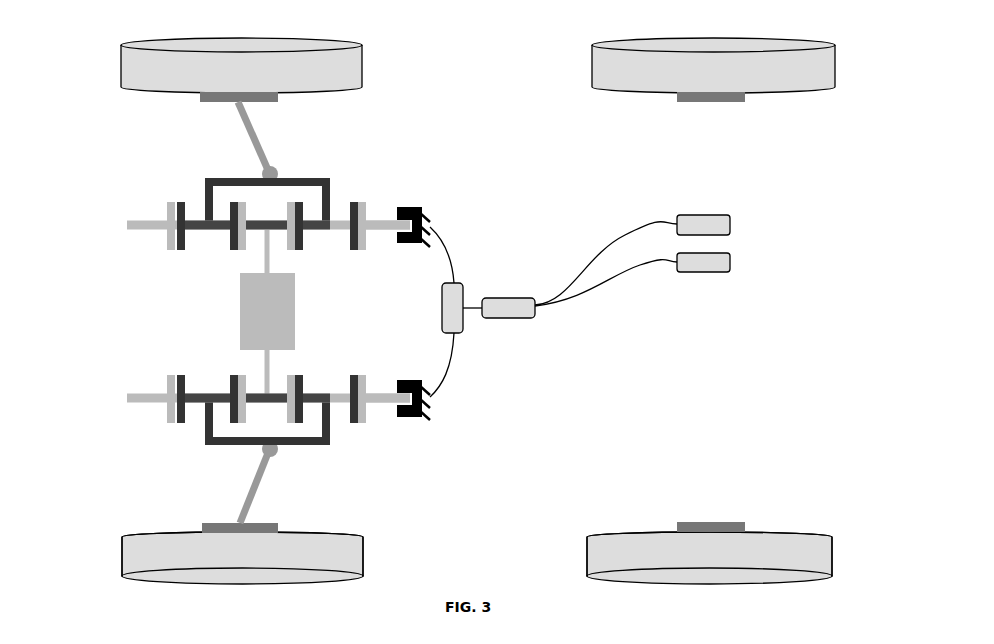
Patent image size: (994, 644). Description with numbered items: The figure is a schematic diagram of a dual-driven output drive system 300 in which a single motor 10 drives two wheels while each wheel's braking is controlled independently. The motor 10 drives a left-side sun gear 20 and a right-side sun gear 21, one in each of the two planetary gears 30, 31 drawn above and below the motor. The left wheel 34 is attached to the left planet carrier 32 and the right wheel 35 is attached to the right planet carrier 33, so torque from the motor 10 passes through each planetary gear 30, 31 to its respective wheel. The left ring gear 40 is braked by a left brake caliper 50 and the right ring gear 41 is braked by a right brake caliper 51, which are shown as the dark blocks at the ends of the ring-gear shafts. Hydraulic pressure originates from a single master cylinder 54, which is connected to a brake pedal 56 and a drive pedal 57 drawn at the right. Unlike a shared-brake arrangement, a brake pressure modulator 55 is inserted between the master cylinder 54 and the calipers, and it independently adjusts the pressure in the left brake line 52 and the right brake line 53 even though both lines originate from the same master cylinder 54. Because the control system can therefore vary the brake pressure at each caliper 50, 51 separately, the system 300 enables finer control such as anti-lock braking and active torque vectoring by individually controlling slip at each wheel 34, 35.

The dual-driven output drive system 300 is at (897, 138).
The motor 10 is at (233, 317).
The left-side sun gear 20 is at (272, 209).
The right-side sun gear 21 is at (277, 420).
The planetary gear 30 is at (332, 244).
The planetary gear 31 is at (330, 380).
The left planet carrier 32 is at (232, 170).
The right planet carrier 33 is at (247, 452).
The left wheel 34 is at (110, 58).
The right wheel 35 is at (104, 556).
The left ring gear 40 is at (385, 210).
The right ring gear 41 is at (376, 419).
The left brake caliper 50 is at (410, 196).
The right brake caliper 51 is at (406, 425).
The left brake line 52 is at (467, 253).
The right brake line 53 is at (457, 368).
The master cylinder 54 is at (528, 283).
The brake pressure modulator 55 is at (468, 323).
The brake pedal 56 is at (728, 208).
The drive pedal 57 is at (712, 274).